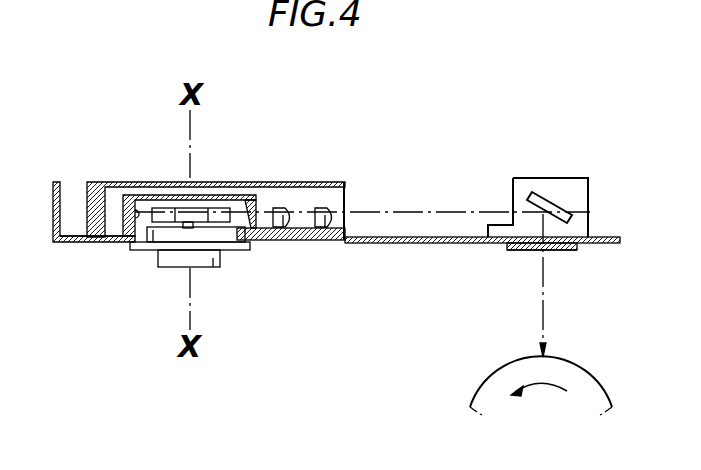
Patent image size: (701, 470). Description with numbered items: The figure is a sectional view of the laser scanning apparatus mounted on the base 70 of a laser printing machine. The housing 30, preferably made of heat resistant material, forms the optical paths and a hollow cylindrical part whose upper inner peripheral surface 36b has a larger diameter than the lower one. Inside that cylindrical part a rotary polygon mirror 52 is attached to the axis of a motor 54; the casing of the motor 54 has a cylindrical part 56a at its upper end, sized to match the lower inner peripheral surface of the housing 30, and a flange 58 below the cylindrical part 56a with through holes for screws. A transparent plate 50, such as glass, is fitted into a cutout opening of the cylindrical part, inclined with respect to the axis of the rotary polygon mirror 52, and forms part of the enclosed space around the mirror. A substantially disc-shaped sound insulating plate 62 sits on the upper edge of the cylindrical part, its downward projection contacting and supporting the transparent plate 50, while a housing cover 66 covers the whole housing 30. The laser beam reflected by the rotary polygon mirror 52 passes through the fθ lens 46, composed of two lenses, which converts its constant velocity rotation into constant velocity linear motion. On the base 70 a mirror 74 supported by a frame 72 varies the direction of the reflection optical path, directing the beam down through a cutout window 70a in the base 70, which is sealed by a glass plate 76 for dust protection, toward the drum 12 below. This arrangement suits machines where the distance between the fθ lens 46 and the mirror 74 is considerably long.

The housing 30 is at (83, 197).
The upper inner peripheral surface 36b is at (115, 243).
The fθ lens 46 is at (304, 241).
The transparent plate 50 is at (276, 243).
The rotary polygon mirror 52 is at (160, 212).
The motor 54 is at (214, 269).
The cylindrical part 56a is at (157, 234).
The flange 58 is at (244, 247).
The sound insulating plate 62 is at (226, 200).
The housing cover 66 is at (273, 182).
The base 70 is at (603, 248).
The cutout window 70a is at (513, 257).
The frame 72 is at (553, 178).
The mirror 74 is at (558, 213).
The glass plate 76 is at (557, 257).
The rotating drum 12 is at (582, 387).